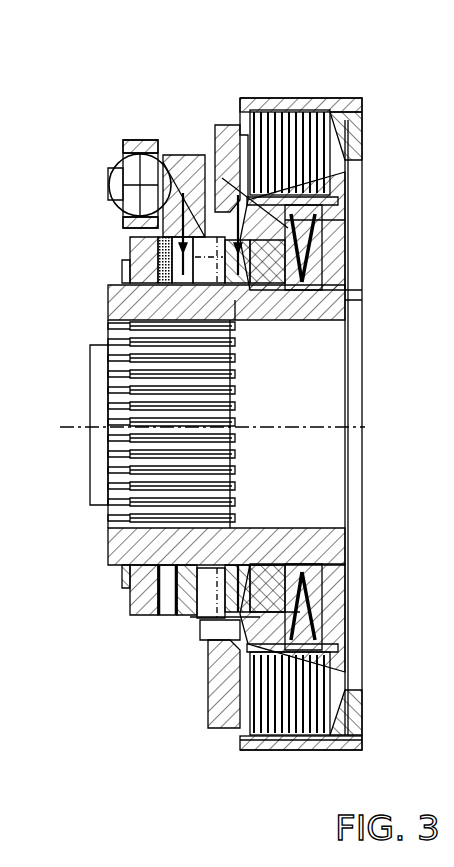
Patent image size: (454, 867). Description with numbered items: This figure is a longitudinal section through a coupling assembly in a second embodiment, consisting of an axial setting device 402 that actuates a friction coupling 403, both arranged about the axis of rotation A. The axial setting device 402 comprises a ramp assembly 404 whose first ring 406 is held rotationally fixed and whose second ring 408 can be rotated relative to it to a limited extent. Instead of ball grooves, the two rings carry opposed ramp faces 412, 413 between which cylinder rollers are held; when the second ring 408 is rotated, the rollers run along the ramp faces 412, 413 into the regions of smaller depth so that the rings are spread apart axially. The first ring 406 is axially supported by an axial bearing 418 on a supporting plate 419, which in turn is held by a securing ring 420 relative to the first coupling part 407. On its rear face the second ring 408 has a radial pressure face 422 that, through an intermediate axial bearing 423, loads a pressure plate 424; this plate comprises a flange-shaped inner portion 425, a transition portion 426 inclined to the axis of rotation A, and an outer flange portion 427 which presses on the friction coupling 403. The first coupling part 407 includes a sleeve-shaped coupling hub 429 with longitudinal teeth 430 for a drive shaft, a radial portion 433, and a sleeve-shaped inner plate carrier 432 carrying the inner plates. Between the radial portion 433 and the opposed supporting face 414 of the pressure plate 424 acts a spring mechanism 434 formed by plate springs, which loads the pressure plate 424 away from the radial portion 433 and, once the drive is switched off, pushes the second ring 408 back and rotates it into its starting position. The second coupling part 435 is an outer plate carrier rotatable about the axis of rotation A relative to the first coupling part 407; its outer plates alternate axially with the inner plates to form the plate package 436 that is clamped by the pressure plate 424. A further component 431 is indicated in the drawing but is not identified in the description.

The axial setting device 402 is at (148, 95).
The friction coupling 403 is at (288, 95).
The ramp assembly 404 is at (200, 155).
The first ring 406 is at (176, 615).
The first coupling part 407 is at (340, 560).
The second ring 408 is at (276, 565).
The ramp face 412 is at (210, 618).
The ramp face 413 is at (244, 563).
The supporting face 414 is at (316, 590).
The axial bearing 418 is at (172, 620).
The supporting plate 419 is at (140, 615).
The securing ring 420 is at (122, 588).
The radial pressure face 422 is at (252, 288).
The axial bearing 423 is at (300, 576).
The pressure plate 424 is at (290, 216).
The flange-shaped inner portion 425 is at (293, 288).
The transition portion 426 is at (278, 200).
The outer flange portion 427 is at (230, 728).
The coupling hub 429 is at (118, 548).
The longitudinal teeth 430 is at (108, 465).
The pins 431 is at (236, 215).
The inner plate carrier 432 is at (346, 660).
The radial portion 433 is at (336, 288).
The spring mechanism 434 is at (318, 240).
The second coupling part 435 is at (356, 734).
The plate package 436 is at (330, 684).
The axis of rotation A is at (352, 427).